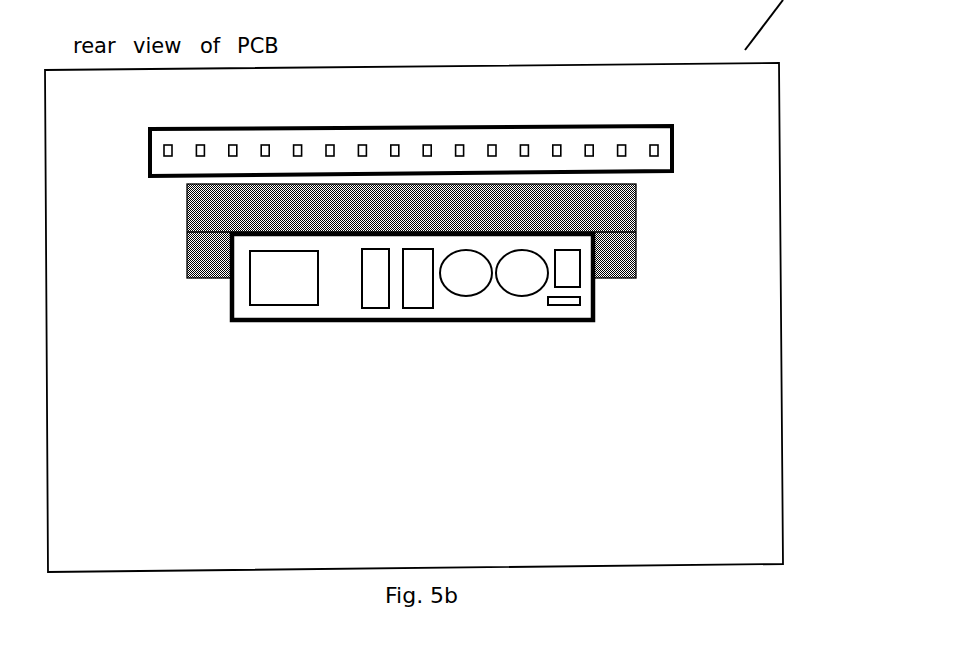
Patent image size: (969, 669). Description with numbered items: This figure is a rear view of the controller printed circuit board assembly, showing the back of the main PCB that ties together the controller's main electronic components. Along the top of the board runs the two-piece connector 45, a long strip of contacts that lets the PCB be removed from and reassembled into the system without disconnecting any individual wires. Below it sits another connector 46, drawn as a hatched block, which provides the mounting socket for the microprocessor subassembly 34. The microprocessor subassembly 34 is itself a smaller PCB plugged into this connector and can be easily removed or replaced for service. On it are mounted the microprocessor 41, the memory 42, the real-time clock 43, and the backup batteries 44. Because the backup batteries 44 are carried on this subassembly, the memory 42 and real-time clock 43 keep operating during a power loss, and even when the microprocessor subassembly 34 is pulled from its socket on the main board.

The microprocessor subassembly 34 is at (607, 303).
The microprocessor 41 is at (283, 310).
The memory 42 is at (394, 310).
The real-time clock 43 is at (560, 295).
The backup batteries 44 is at (498, 297).
The two-piece connector 45 is at (521, 122).
The connector 46 is at (642, 240).